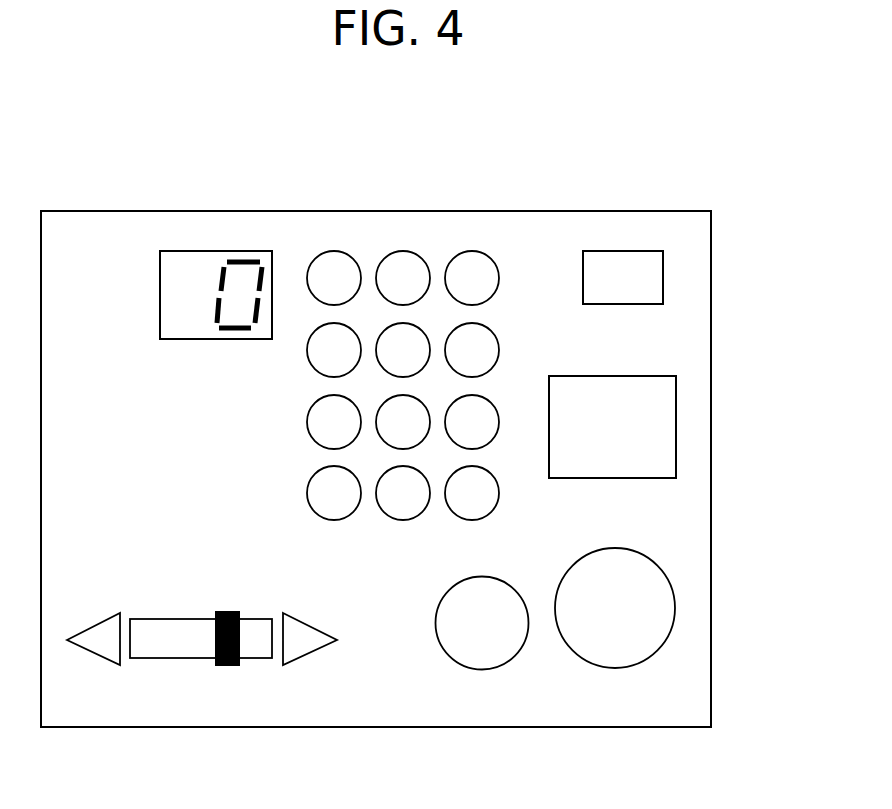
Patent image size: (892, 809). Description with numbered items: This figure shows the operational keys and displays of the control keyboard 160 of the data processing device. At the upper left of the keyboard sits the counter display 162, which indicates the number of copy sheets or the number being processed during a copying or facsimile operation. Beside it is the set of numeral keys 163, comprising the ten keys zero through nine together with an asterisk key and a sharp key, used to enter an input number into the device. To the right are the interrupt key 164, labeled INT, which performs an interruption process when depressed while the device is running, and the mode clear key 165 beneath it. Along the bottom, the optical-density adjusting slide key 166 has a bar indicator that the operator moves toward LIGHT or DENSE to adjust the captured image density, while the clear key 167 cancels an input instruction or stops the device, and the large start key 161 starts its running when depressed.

The control keyboard 160 is at (348, 209).
The start key 161 is at (676, 603).
The counter display 162 is at (202, 250).
The numeral keys 163 is at (484, 236).
The interrupt key 164 is at (663, 280).
The mode clear key 165 is at (676, 429).
The optical-density adjusting slide key 166 is at (305, 672).
The clear key 167 is at (500, 669).